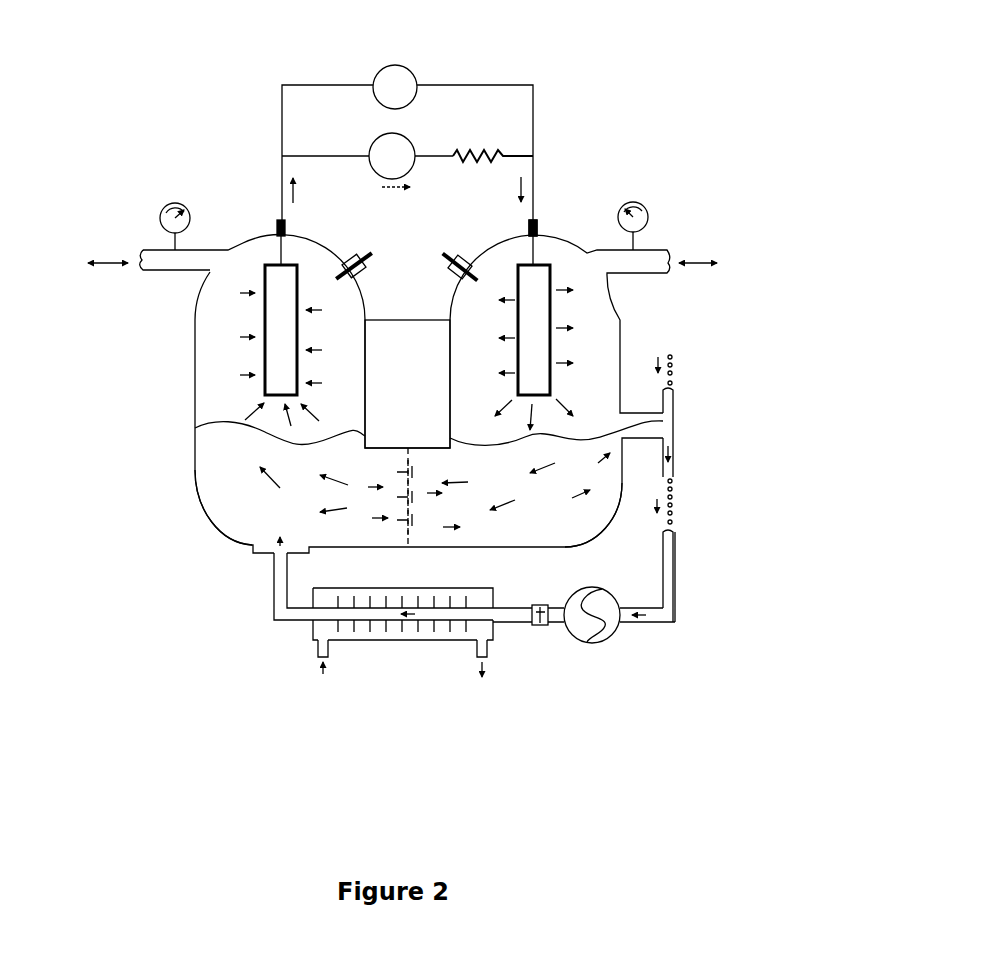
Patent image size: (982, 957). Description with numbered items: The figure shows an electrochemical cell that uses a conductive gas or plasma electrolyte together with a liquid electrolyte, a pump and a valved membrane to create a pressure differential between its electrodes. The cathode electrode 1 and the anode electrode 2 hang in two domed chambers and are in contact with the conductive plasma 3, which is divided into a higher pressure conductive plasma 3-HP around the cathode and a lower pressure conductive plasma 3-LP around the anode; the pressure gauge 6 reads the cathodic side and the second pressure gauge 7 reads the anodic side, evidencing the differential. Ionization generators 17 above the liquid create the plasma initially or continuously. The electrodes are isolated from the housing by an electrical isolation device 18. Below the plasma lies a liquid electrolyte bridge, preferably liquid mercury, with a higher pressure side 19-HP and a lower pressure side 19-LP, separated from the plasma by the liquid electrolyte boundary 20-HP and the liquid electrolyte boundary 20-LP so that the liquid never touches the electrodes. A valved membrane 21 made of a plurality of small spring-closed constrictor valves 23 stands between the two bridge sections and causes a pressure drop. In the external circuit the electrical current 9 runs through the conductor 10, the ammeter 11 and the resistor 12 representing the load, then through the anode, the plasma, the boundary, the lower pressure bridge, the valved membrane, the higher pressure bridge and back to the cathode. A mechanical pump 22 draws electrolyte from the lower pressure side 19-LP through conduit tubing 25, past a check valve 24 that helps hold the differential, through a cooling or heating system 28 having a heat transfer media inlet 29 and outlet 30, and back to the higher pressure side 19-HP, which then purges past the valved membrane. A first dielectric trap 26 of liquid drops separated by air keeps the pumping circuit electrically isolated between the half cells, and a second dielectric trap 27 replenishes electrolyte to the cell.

The cathode electrode 1 is at (287, 320).
The anode electrode 2 is at (540, 283).
The conductive plasma 3 is at (340, 320).
The conductive plasma (high pressure) 3-HP is at (250, 320).
The conductive plasma (low pressure) 3-LP is at (595, 320).
The pressure gauge 6 is at (158, 195).
The second pressure gauge 7 is at (650, 213).
The electrical current 9 is at (412, 193).
The conductor 10 is at (303, 157).
The ammeter 11 is at (378, 138).
The resistor 12 is at (483, 142).
The ionization generators 17 is at (442, 262).
The electrical isolation device 18 is at (538, 215).
The higher pressure side of liquid electrolyte bridge 19-HP is at (232, 482).
The lower pressure side of liquid electrolyte bridge 19-LP is at (558, 520).
The liquid electrolyte boundary (high pressure) 20-HP is at (205, 433).
The liquid electrolyte boundary (low pressure) 20-LP is at (620, 430).
The valved membrane 21 is at (395, 500).
The mechanical pump 22 is at (615, 630).
The constrictor valves 23 is at (413, 520).
The check valve 24 is at (542, 628).
The conduit tubing 25 is at (672, 610).
The first dielectric trap 26 is at (690, 502).
The second dielectric trap 27 is at (688, 375).
The cooling or heating system 28 is at (395, 647).
The heat transfer media inlet 29 is at (323, 683).
The heat transfer media outlet 30 is at (468, 682).